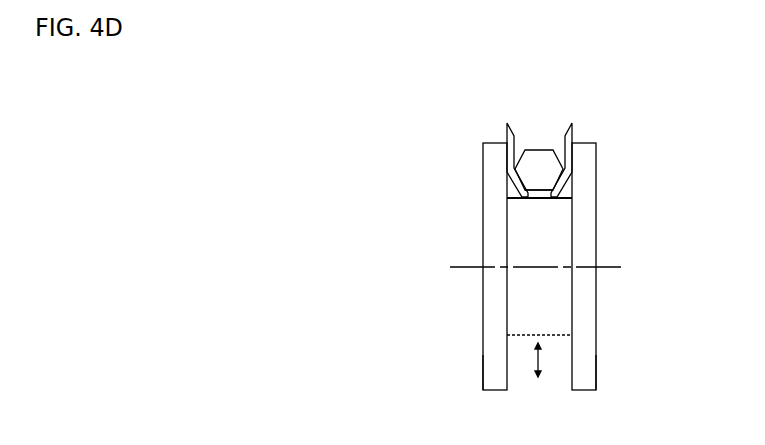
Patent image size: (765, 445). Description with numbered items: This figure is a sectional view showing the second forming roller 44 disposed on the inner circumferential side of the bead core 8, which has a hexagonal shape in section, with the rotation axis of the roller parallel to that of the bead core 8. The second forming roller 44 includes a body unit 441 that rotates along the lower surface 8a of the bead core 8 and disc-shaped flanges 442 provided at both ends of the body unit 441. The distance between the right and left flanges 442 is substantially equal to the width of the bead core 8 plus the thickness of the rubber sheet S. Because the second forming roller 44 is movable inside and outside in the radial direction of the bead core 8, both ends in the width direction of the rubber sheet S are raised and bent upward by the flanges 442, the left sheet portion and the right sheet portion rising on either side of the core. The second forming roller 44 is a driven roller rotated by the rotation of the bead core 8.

The second forming roller 44 is at (483, 223).
The body unit 441 is at (524, 197).
The flanges 442 is at (483, 355).
The bead core 8 is at (537, 163).
The lower surface 8a is at (543, 196).
The rubber sheet S is at (507, 140).